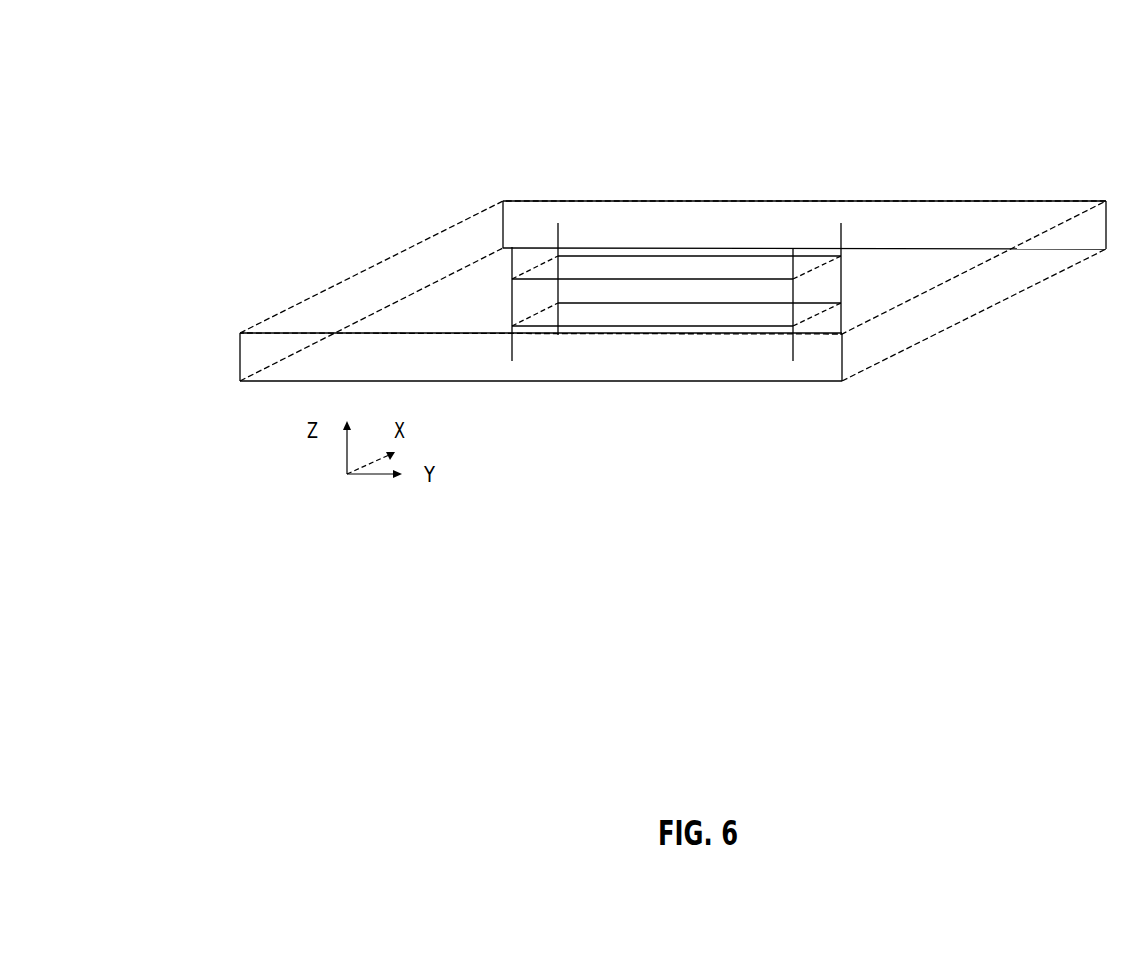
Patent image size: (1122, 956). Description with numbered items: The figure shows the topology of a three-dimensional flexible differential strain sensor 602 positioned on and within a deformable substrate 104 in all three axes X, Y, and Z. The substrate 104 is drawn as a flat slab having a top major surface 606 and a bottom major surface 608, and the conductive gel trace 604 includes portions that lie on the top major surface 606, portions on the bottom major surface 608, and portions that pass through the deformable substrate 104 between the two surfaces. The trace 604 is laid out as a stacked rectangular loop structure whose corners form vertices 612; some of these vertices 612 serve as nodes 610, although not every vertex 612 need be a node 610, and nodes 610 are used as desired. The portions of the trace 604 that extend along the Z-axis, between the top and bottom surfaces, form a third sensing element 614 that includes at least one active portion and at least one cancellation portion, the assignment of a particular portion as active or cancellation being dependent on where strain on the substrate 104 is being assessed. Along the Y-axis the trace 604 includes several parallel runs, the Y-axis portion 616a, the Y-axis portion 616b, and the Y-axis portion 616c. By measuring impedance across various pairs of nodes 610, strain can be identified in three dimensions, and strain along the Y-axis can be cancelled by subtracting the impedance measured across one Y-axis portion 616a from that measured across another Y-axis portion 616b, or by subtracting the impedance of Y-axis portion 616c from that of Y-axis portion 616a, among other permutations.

The three-dimensional flexible differential strain sensor 602 is at (290, 80).
The conductive gel trace 604 is at (512, 303).
The top major surface 606 is at (1002, 201).
The bottom major surface 608 is at (673, 380).
The nodes 610 is at (559, 223).
The vertices 612 is at (512, 325).
The third sensing element 614 is at (852, 303).
The Y-axis portion 616a is at (688, 256).
The Y-axis portion 616b is at (612, 338).
The Y-axis portion 616c is at (633, 279).
The deformable substrate 104 is at (883, 337).